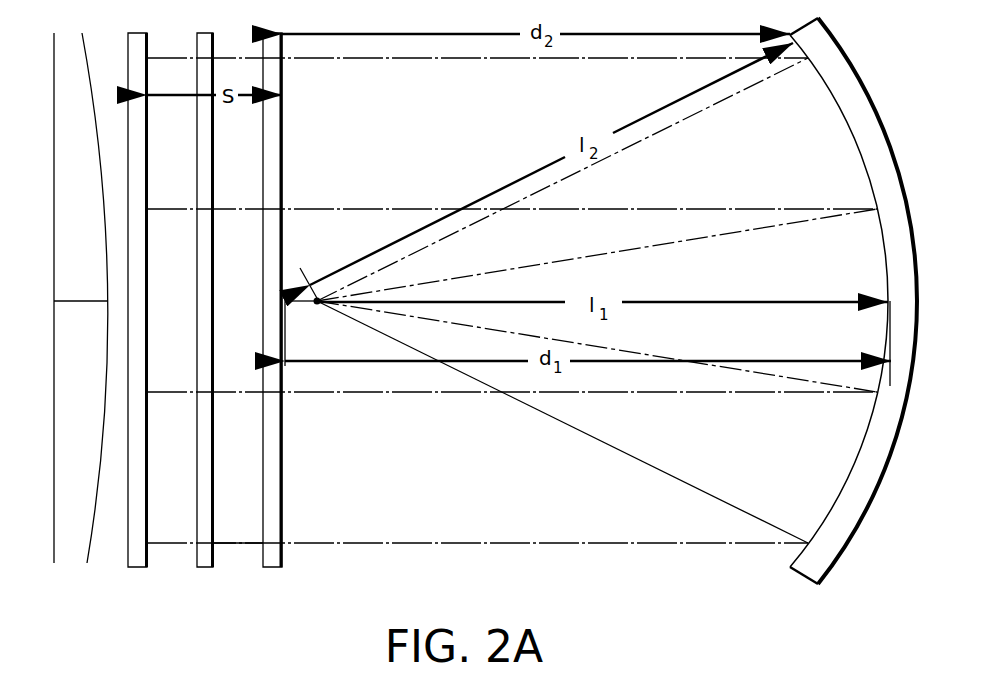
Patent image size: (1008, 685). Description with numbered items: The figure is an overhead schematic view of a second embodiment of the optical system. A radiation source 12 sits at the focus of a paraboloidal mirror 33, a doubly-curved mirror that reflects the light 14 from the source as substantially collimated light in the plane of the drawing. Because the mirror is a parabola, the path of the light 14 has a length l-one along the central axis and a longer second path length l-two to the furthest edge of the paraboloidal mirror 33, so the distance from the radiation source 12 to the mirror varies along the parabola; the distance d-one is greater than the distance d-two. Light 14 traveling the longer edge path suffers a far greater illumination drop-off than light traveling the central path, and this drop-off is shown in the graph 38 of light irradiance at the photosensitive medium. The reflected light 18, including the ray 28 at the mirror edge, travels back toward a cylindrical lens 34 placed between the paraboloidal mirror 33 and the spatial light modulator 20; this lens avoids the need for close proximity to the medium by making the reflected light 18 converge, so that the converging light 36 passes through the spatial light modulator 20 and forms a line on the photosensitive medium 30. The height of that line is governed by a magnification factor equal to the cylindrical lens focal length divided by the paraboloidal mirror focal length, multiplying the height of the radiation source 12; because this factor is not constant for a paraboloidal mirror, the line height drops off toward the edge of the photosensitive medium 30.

The radiation source 12 is at (317, 305).
The light 14 is at (592, 442).
The reflected light 18 is at (512, 545).
The spatial light modulator 20 is at (207, 557).
The light ray 28 is at (160, 56).
The photosensitive medium 30 is at (138, 557).
The paraboloidal mirror 33 is at (861, 77).
The cylindrical lens 34 is at (273, 557).
The converging light 36 is at (240, 539).
The graph 38 is at (50, 552).